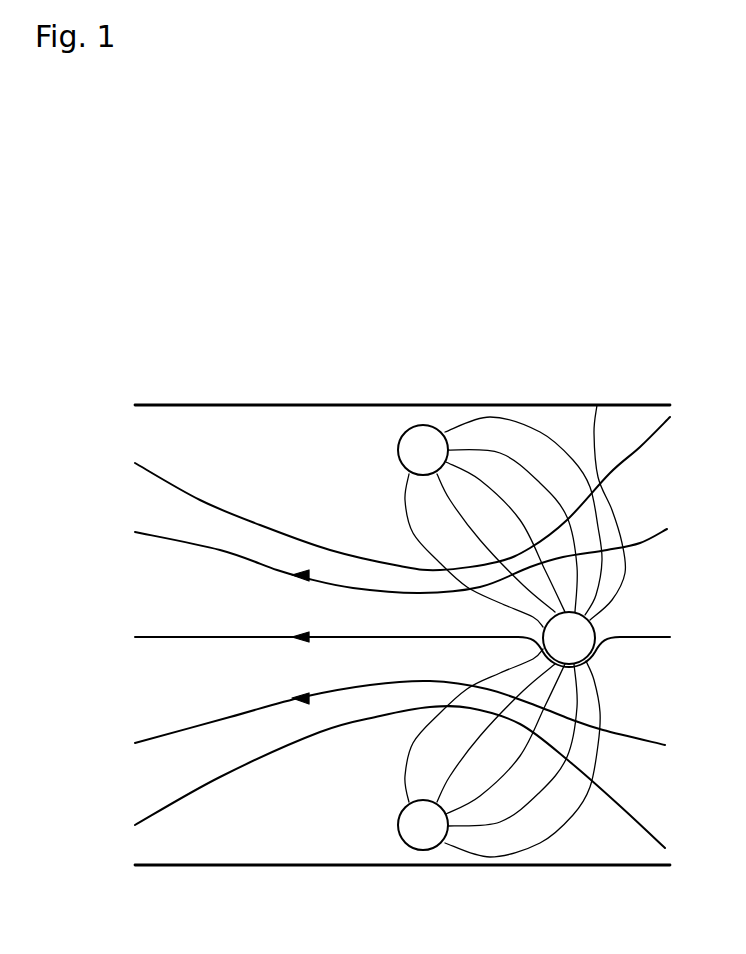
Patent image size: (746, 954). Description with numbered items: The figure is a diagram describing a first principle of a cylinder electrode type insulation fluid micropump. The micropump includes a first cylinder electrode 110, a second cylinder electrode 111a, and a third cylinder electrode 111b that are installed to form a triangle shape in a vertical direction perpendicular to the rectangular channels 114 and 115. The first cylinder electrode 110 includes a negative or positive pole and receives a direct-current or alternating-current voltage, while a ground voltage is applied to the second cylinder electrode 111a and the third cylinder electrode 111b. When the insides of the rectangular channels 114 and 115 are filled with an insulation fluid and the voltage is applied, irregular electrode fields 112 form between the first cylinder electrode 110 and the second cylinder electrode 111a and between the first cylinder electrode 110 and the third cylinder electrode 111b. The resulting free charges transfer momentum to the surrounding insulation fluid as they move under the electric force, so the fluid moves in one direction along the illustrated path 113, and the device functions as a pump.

The first cylinder electrode 110 is at (597, 405).
The second cylinder electrode 111a is at (423, 425).
The third cylinder electrode 111b is at (429, 850).
The irregular electrode fields 112 is at (580, 805).
The illustrated path 113 is at (230, 717).
The rectangular channel 114 is at (261, 405).
The rectangular channel 115 is at (350, 865).